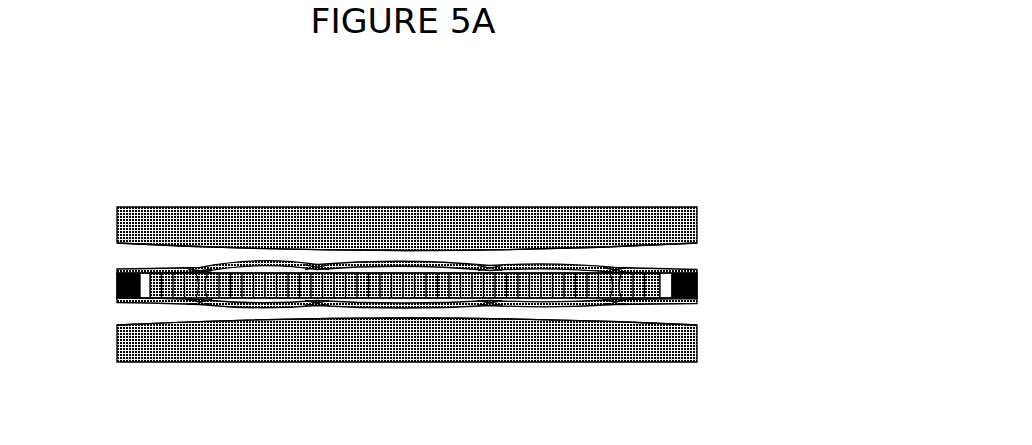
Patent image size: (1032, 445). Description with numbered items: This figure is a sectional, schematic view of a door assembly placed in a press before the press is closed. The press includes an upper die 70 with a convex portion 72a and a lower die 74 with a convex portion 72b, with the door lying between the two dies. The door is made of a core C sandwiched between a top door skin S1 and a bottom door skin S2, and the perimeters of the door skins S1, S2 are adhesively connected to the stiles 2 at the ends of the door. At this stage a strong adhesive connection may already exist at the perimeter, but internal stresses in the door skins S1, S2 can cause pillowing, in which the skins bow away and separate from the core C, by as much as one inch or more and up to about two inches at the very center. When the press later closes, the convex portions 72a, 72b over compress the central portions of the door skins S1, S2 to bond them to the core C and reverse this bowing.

The upper die 70 is at (545, 207).
The convex portion 72a is at (375, 249).
The lower die 74 is at (638, 338).
The convex portion 72b is at (400, 322).
The top door skin S1 is at (248, 267).
The bottom door skin S2 is at (222, 312).
The core C is at (165, 272).
The stiles 2 is at (117, 295).